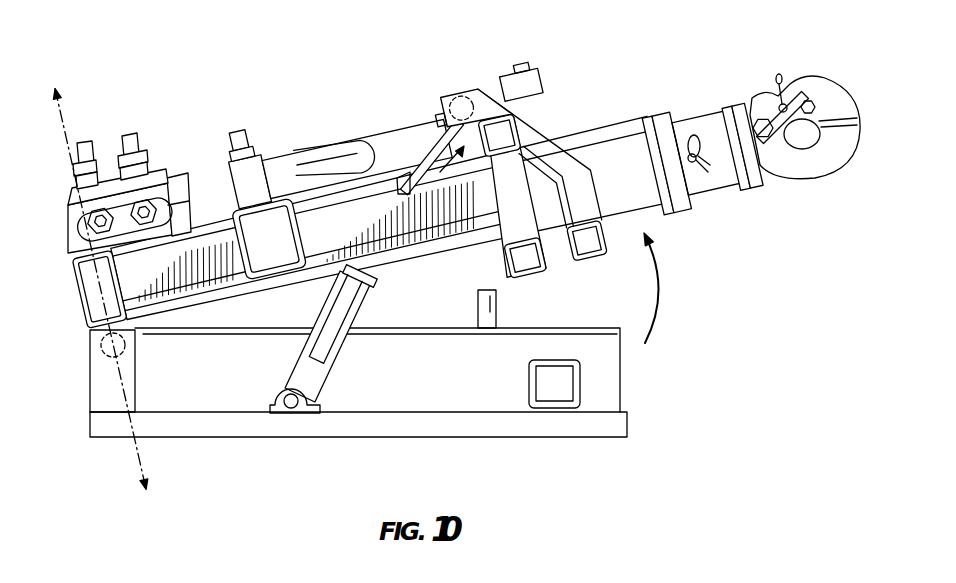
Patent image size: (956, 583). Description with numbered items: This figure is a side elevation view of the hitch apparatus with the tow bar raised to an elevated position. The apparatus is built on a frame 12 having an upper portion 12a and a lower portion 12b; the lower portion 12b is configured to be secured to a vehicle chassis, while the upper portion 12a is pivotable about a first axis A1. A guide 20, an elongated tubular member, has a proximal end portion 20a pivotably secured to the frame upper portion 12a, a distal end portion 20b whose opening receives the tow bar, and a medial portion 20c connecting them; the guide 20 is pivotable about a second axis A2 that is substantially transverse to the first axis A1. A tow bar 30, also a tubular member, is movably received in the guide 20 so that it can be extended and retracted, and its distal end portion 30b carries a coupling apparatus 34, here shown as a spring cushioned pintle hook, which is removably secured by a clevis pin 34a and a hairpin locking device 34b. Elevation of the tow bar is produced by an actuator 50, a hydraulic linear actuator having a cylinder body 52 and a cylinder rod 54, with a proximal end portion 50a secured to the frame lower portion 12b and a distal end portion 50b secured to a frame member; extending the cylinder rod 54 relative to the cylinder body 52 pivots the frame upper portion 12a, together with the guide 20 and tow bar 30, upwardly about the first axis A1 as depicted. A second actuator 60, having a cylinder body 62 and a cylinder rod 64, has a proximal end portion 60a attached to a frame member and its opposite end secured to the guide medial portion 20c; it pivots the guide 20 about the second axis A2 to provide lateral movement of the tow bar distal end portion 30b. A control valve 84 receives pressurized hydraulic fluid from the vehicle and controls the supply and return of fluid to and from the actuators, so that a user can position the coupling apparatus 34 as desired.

The frame 12 is at (57, 306).
The frame upper portion 12a is at (204, 224).
The frame lower portion 12b is at (187, 442).
The guide 20 is at (618, 157).
The guide proximal end portion 20a is at (137, 328).
The guide distal end portion 20b is at (637, 127).
The guide medial portion 20c is at (362, 236).
The tow bar 30 is at (720, 170).
The tow bar distal end portion 30b is at (712, 113).
The coupling apparatus 34 is at (820, 78).
The clevis pin 34a is at (694, 165).
The hairpin locking device 34b is at (690, 134).
The actuator 50 is at (340, 350).
The actuator proximal end portion 50a is at (305, 398).
The actuator distal end portion 50b is at (438, 112).
The cylinder body 52 is at (362, 306).
The cylinder rod 54 is at (415, 167).
The actuator 60 is at (297, 160).
The actuator proximal end portion 60a is at (228, 205).
The cylinder body 62 is at (342, 150).
The cylinder rod 64 is at (447, 115).
The control valve 84 is at (150, 178).
The first axis A1 is at (110, 347).
The second axis A2 is at (67, 137).